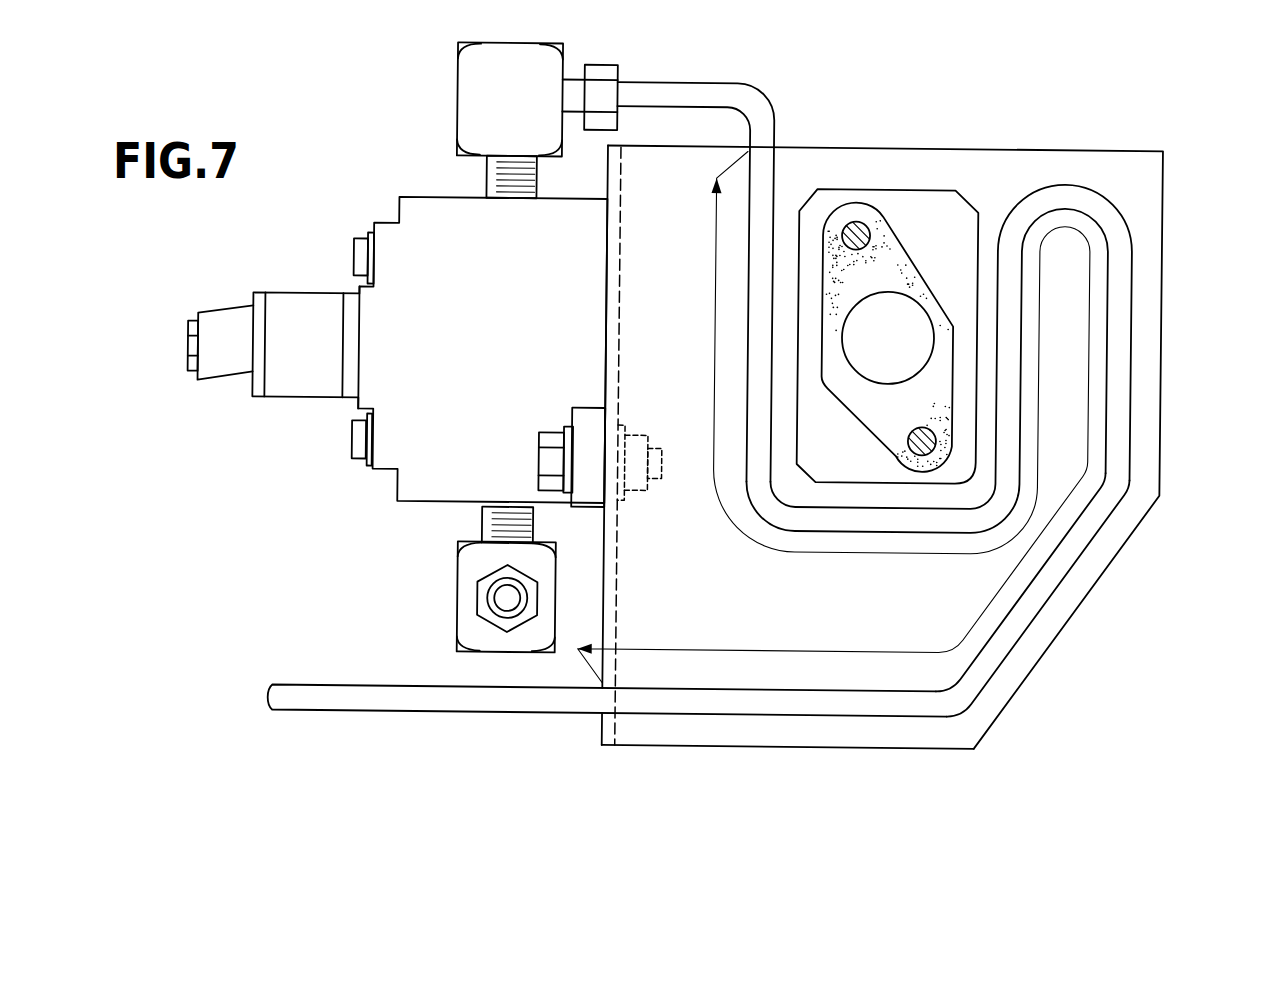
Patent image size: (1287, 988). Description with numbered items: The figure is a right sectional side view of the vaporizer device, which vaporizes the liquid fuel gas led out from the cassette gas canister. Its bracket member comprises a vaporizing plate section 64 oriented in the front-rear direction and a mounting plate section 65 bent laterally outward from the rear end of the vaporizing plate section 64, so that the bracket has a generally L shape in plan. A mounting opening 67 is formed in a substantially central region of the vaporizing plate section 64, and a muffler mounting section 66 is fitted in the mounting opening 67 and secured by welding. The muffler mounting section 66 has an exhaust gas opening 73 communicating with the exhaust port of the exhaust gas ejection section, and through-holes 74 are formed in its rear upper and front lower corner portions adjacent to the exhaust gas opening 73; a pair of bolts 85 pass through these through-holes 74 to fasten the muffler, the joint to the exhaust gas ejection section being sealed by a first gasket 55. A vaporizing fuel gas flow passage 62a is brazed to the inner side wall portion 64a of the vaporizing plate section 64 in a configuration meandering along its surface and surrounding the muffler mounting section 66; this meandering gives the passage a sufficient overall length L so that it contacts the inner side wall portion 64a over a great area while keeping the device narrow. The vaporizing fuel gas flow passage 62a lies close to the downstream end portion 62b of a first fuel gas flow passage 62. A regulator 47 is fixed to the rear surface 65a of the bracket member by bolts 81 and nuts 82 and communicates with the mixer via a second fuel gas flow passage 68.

The regulator 47 is at (433, 233).
The first fuel gas flow passage 62 is at (358, 728).
The vaporizing fuel gas flow passage 62a is at (1032, 608).
The downstream end portion 62b is at (656, 91).
The vaporizing plate section 64 is at (1010, 145).
The inner side wall portion 64a is at (788, 721).
The mounting plate section 65 is at (597, 297).
The rear surface 65a is at (607, 343).
The muffler mounting section 66 is at (998, 301).
The mounting opening 67 is at (924, 187).
The first gasket 55 is at (935, 397).
The exhaust gas opening 73 is at (866, 360).
The through-holes 74 is at (843, 235).
The bolts 85 is at (857, 219).
The bolts 81 is at (548, 461).
The nuts 82 is at (640, 495).
The second fuel gas flow passage 68 is at (496, 614).
The overall length L is at (717, 371).